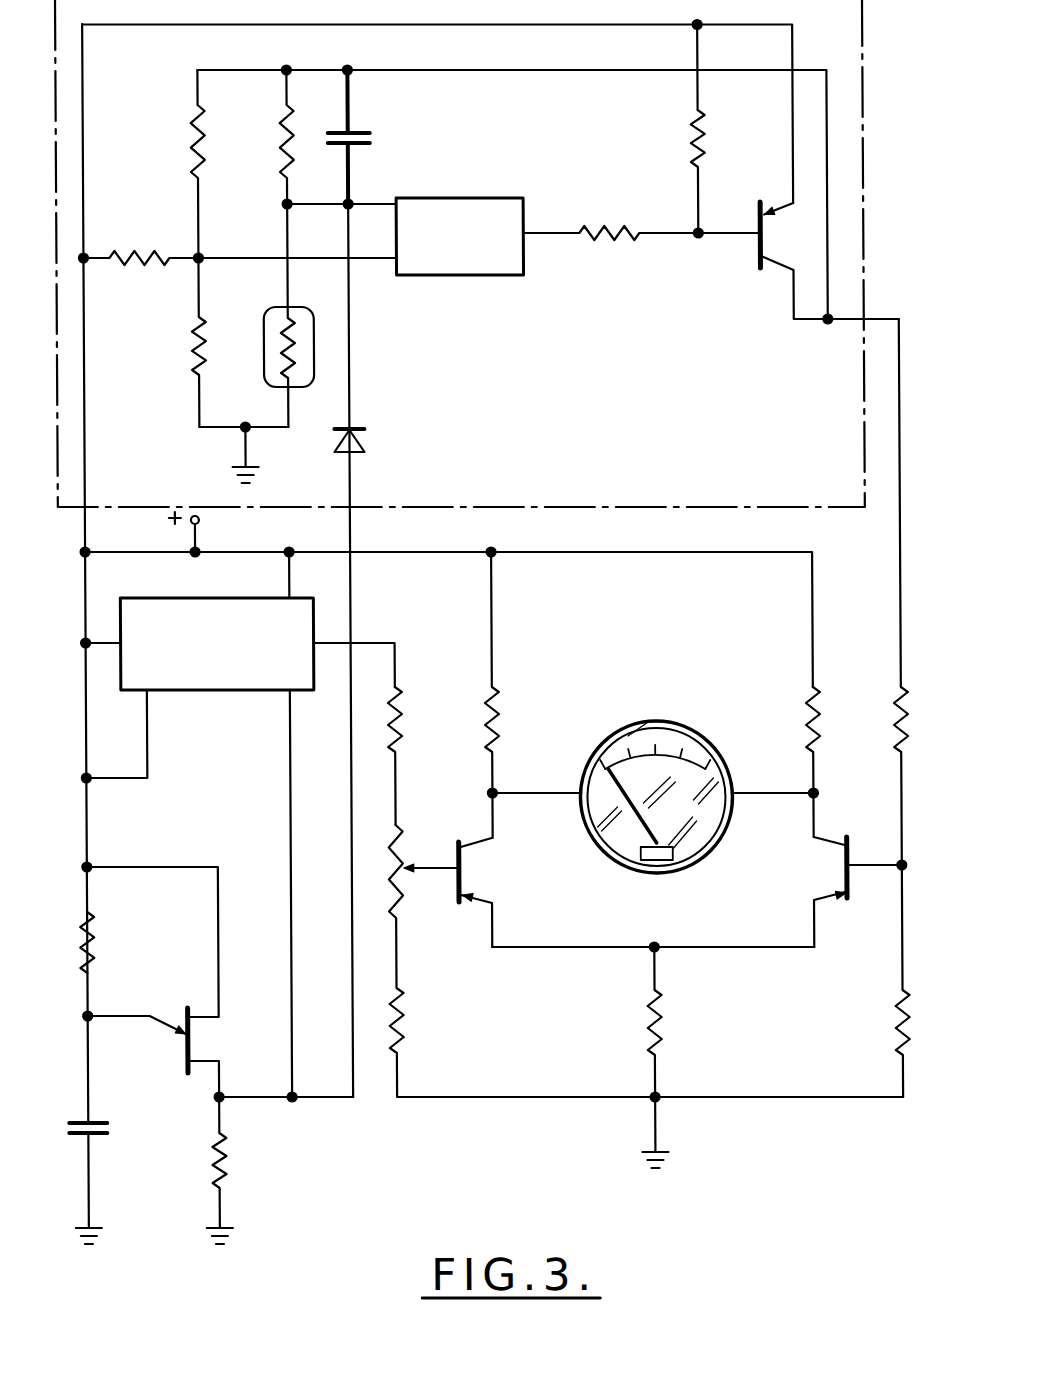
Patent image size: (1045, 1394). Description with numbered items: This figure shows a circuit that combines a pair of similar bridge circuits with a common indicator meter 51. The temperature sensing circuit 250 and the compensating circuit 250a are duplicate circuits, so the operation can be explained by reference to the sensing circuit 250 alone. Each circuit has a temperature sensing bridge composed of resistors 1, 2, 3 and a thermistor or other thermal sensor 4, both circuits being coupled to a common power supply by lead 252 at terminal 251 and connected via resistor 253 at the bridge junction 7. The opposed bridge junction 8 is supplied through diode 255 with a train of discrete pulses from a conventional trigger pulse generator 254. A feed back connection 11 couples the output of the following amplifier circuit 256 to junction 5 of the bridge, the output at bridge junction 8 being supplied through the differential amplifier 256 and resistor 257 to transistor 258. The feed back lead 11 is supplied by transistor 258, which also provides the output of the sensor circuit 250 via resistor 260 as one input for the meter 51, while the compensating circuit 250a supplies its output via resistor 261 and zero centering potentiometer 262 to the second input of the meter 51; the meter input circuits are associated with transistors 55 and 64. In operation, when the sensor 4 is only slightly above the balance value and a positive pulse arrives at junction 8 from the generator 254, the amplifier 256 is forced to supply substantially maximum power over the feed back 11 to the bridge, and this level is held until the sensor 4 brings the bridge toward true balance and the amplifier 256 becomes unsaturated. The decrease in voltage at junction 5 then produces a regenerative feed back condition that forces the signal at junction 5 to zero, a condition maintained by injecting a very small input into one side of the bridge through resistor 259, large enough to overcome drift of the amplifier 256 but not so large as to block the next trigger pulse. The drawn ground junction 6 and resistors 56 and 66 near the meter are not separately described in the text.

The resistor 1 is at (192, 135).
The resistor 2 is at (192, 366).
The resistor 3 is at (281, 135).
The thermistor 4 is at (262, 323).
The bridge junction 5 is at (286, 68).
The junction 6 is at (243, 425).
The bridge junction 7 is at (199, 257).
The bridge junction 8 is at (288, 206).
The feed back connection 11 is at (533, 70).
The indicator meter 51 is at (655, 720).
The transistor 55 is at (462, 862).
The resistor 56 is at (497, 725).
The transistor 64 is at (842, 863).
The resistor 66 is at (807, 728).
The sensing circuit 250 is at (712, 507).
The compensating circuit 250a is at (215, 691).
The terminal 251 is at (197, 520).
The lead 252 is at (84, 520).
The resistor 253 is at (133, 262).
The trigger pulse generator 254 is at (170, 953).
The diode 255 is at (369, 440).
The amplifier circuit 256 is at (457, 276).
The resistor 257 is at (608, 240).
The transistor 258 is at (755, 270).
The resistor 259 is at (683, 150).
The resistor 260 is at (897, 710).
The resistor 261 is at (394, 692).
The zero centering potentiometer 262 is at (395, 828).